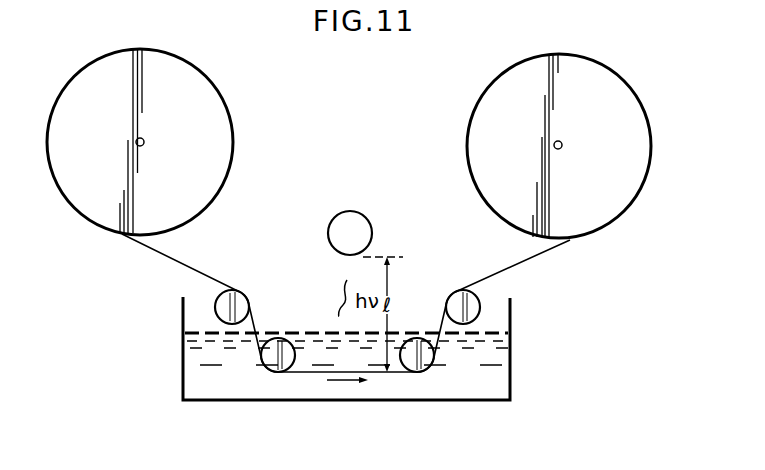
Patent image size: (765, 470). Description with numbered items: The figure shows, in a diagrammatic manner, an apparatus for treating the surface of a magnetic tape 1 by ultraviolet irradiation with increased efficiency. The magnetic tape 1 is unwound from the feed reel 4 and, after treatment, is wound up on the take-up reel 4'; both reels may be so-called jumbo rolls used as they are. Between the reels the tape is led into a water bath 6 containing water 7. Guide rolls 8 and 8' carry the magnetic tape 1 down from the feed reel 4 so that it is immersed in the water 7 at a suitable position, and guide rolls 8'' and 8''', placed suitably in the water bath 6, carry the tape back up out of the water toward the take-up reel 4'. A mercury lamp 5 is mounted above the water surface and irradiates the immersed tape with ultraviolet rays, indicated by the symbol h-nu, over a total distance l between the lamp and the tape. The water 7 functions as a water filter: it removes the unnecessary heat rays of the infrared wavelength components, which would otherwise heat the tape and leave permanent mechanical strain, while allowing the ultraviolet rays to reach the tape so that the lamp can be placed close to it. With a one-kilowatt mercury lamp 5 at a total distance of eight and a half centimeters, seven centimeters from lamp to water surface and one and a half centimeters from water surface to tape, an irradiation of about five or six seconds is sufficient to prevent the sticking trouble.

The feed reel 4 is at (134, 142).
The take-up reel 4' is at (573, 146).
The magnetic tape 1 is at (201, 268).
The mercury lamp 5 is at (355, 222).
The water bath 6 is at (183, 315).
The water 7 is at (192, 370).
The guide roll 8 is at (219, 302).
The guide roll 8' is at (281, 329).
The guide roll 8'' is at (417, 329).
The guide roll 8''' is at (483, 300).